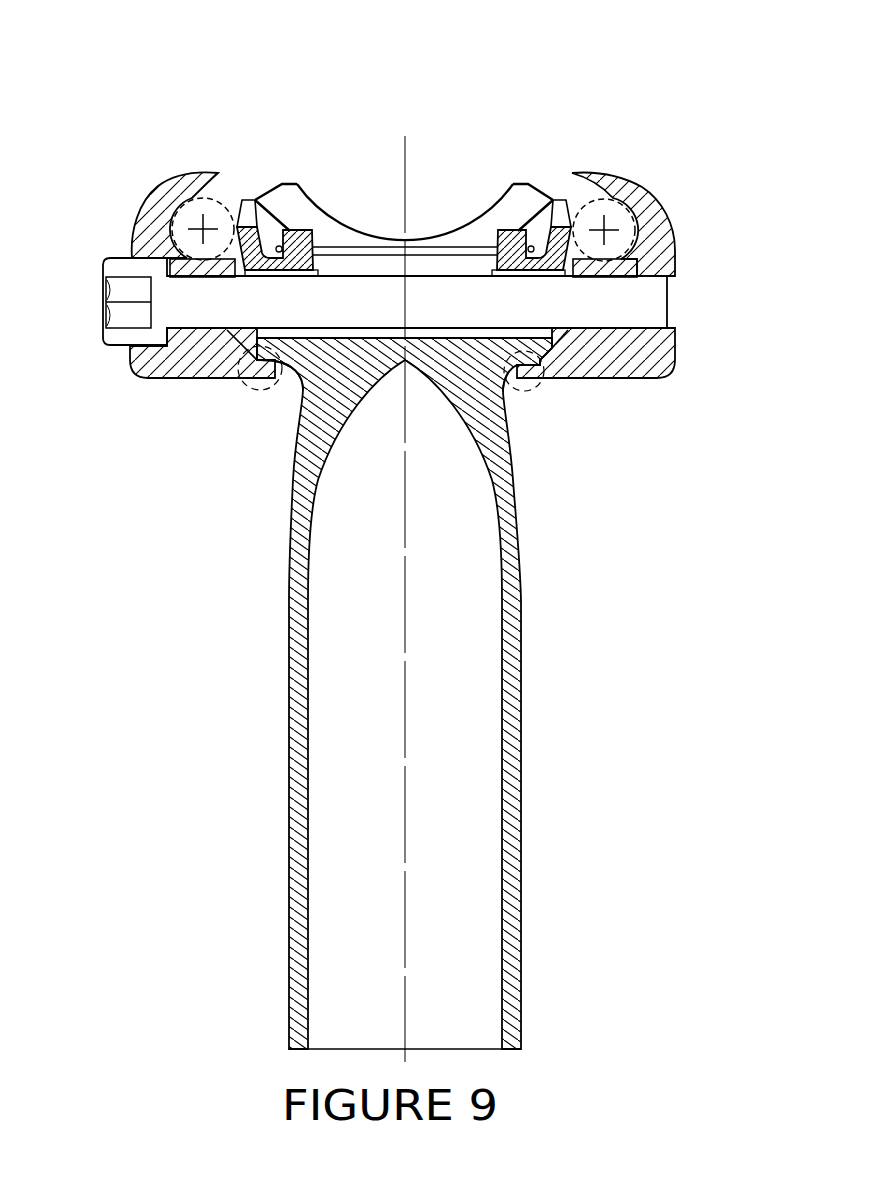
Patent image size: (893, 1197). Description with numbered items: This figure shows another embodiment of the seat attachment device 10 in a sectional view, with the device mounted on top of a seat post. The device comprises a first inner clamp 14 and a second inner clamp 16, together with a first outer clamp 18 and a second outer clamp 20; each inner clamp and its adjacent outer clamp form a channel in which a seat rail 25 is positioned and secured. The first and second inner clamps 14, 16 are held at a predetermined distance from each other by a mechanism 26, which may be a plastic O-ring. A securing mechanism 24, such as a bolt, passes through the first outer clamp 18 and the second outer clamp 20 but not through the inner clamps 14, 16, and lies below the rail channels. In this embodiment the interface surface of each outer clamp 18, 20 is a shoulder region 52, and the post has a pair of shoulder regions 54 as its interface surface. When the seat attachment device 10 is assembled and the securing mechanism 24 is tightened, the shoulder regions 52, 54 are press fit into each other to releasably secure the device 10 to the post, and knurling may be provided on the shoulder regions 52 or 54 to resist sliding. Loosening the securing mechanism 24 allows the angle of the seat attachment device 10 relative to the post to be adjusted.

The seat attachment device 10 is at (568, 60).
The first inner clamp 14 is at (292, 237).
The second inner clamp 16 is at (510, 237).
The first outer clamp 18 is at (130, 362).
The second outer clamp 20 is at (670, 217).
The securing mechanism 24 is at (106, 303).
The seat rails 25 is at (208, 203).
The mechanism 26 is at (355, 248).
The shoulder region 52 is at (250, 389).
The shoulder regions 54 is at (247, 372).